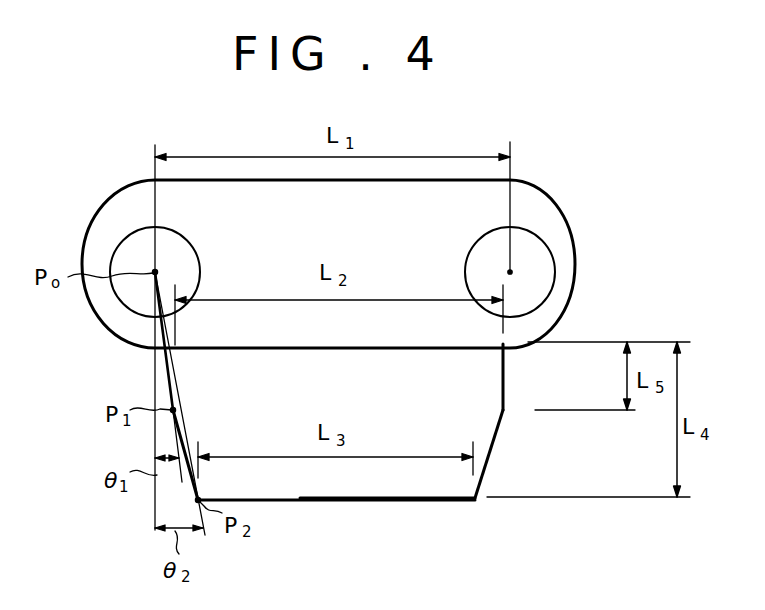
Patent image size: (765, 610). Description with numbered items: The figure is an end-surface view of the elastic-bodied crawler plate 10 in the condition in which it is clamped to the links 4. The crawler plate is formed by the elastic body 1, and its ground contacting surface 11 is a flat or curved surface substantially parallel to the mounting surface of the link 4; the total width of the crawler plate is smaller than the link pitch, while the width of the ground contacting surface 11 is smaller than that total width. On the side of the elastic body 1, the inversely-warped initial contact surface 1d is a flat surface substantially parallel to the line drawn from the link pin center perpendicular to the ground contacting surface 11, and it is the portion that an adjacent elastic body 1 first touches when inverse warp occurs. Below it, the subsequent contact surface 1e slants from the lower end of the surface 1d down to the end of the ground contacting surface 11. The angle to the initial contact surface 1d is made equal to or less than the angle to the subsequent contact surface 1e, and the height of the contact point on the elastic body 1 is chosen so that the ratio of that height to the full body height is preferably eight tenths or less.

The elastic body 1 is at (344, 486).
The inversely-warped initial contact surface 1d is at (506, 388).
The subsequent contact surface 1e is at (490, 455).
The link 4 is at (533, 217).
The elastic-bodied crawler plate 10 is at (470, 512).
The ground contacting surface 11 is at (425, 500).